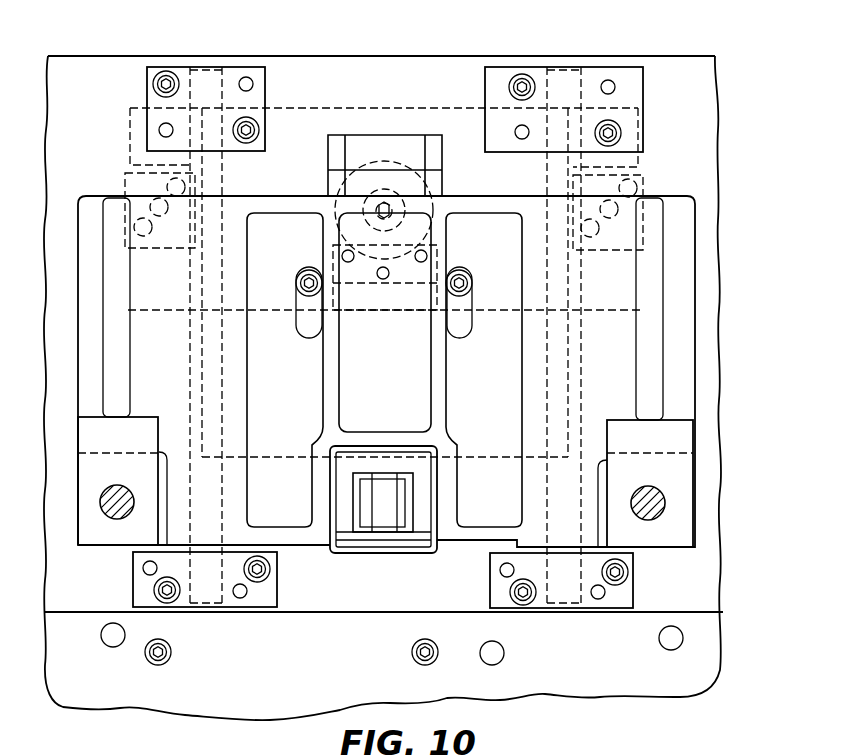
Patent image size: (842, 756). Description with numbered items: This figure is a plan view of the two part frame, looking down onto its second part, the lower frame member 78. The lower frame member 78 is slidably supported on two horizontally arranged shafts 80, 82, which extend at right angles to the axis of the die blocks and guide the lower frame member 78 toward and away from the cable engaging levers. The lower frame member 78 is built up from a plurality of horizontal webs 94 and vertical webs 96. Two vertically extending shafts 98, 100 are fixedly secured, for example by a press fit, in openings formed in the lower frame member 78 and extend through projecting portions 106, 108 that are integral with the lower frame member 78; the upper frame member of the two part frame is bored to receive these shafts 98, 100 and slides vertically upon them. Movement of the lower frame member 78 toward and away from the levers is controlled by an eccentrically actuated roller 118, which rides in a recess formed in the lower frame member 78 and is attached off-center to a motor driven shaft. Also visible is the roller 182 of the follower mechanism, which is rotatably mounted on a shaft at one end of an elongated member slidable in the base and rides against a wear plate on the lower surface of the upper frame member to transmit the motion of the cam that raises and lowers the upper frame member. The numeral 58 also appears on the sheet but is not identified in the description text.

The lower frame member 78 is at (697, 260).
The shaft 80 is at (212, 360).
The shaft 82 is at (558, 385).
The horizontal webs 94 is at (293, 402).
The vertical webs 96 is at (313, 483).
The vertically extending shaft 98 is at (102, 507).
The vertically extending shaft 100 is at (665, 503).
The projecting portion 106 is at (108, 533).
The projecting portion 108 is at (668, 532).
The eccentrically actuated roller 118 is at (380, 158).
The roller 182 is at (385, 518).
The frame member 58 is at (534, 747).